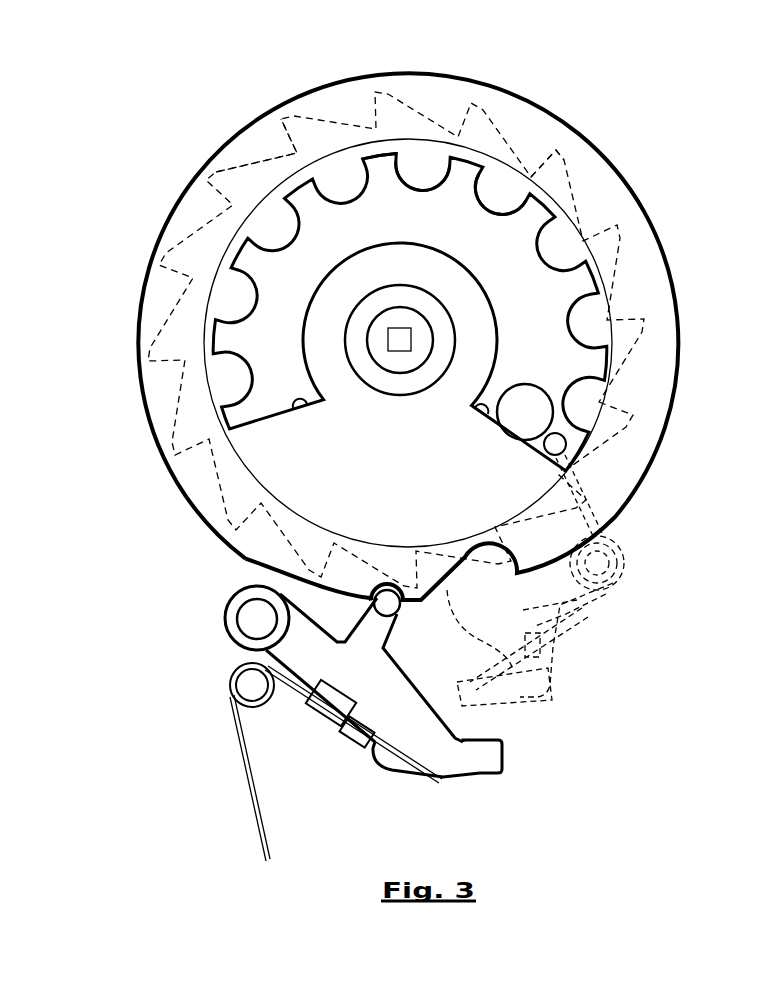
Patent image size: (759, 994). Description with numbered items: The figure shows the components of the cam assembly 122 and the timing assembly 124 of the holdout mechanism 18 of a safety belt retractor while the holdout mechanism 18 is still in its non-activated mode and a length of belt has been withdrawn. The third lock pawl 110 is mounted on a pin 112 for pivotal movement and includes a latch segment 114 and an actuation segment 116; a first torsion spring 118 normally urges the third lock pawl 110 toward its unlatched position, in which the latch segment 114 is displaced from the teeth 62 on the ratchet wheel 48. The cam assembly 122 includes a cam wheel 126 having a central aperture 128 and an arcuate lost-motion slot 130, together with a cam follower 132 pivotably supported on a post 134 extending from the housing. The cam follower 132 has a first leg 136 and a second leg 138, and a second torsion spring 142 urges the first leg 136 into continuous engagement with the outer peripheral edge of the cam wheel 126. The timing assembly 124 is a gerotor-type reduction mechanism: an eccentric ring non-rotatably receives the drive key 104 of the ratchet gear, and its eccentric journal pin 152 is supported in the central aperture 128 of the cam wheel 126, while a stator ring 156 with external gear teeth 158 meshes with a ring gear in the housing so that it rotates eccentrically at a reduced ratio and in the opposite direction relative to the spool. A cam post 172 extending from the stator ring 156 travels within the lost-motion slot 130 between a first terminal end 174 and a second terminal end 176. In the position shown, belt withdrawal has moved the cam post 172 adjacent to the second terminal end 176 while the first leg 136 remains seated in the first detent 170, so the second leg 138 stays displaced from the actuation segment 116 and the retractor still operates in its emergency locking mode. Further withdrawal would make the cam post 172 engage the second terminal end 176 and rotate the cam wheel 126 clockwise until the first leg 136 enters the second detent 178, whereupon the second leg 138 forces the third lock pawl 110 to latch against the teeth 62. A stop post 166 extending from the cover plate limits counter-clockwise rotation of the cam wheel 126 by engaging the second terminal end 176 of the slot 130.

The holdout mechanism 18 is at (409, 61).
The ratchet wheel 48 is at (207, 160).
The teeth 62 is at (340, 78).
The drive key 104 is at (388, 338).
The third lock pawl 110 is at (572, 650).
The pin 112 is at (620, 541).
The latch segment 114 is at (477, 588).
The actuation segment 116 is at (552, 697).
The first torsion spring 118 is at (600, 610).
The cam assembly 122 is at (226, 629).
The timing assembly 124 is at (422, 160).
The cam wheel 126 is at (152, 390).
The central aperture 128 is at (397, 290).
The lost-motion slot 130 is at (500, 178).
The cam follower 132 is at (468, 782).
The post 134 is at (256, 618).
The first leg 136 is at (362, 624).
The second leg 138 is at (504, 752).
The second torsion spring 142 is at (258, 792).
The eccentric journal pin 152 is at (430, 308).
The stator ring 156 is at (347, 207).
The external gear teeth 158 is at (383, 162).
The stop post 166 is at (547, 449).
The first detent 170 is at (384, 590).
The cam post 172 is at (525, 400).
The first terminal end 174 is at (301, 410).
The second terminal end 176 is at (486, 419).
The second detent 178 is at (451, 598).